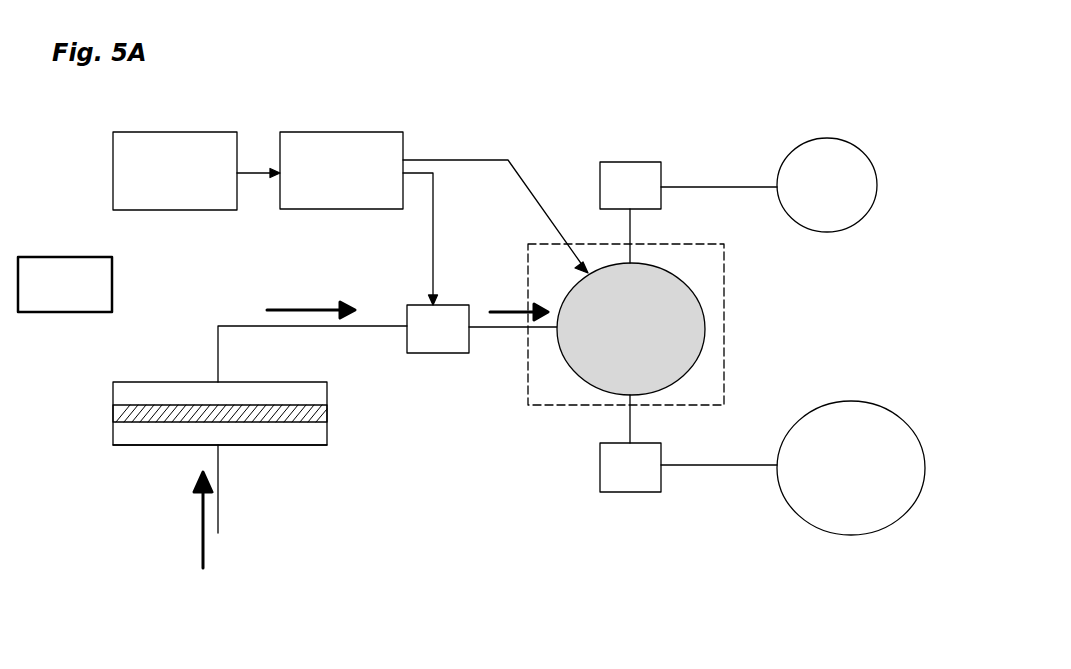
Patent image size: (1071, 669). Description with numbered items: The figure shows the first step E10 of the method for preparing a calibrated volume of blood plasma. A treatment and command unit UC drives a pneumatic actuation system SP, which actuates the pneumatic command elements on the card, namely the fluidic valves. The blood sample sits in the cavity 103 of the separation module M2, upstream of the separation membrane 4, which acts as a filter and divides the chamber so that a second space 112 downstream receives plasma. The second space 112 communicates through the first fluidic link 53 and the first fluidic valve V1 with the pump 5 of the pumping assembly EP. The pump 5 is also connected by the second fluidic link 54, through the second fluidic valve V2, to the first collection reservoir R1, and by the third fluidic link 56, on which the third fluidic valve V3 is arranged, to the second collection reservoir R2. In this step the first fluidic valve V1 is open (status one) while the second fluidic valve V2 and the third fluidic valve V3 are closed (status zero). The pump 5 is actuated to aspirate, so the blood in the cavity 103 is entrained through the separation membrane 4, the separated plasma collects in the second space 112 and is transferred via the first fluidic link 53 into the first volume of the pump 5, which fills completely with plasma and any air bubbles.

The separation membrane 4 is at (127, 413).
The pump 5 is at (683, 313).
The first fluidic link 53 is at (484, 327).
The second fluidic link 54 is at (632, 422).
The third fluidic link 56 is at (630, 228).
The cavity 103 is at (178, 428).
The second space 112 is at (248, 354).
The module for separation of the blood plasma M2 is at (137, 445).
The pumping assembly EP is at (724, 280).
The first fluidic valve V1 is at (438, 343).
The second fluidic valve V2 is at (630, 486).
The third fluidic valve V3 is at (630, 167).
The first collection reservoir R1 is at (847, 413).
The second collection reservoir R2 is at (857, 209).
The treatment and command unit UC is at (175, 171).
The pneumatic actuation system SP is at (341, 170).
The step E10 is at (65, 284).